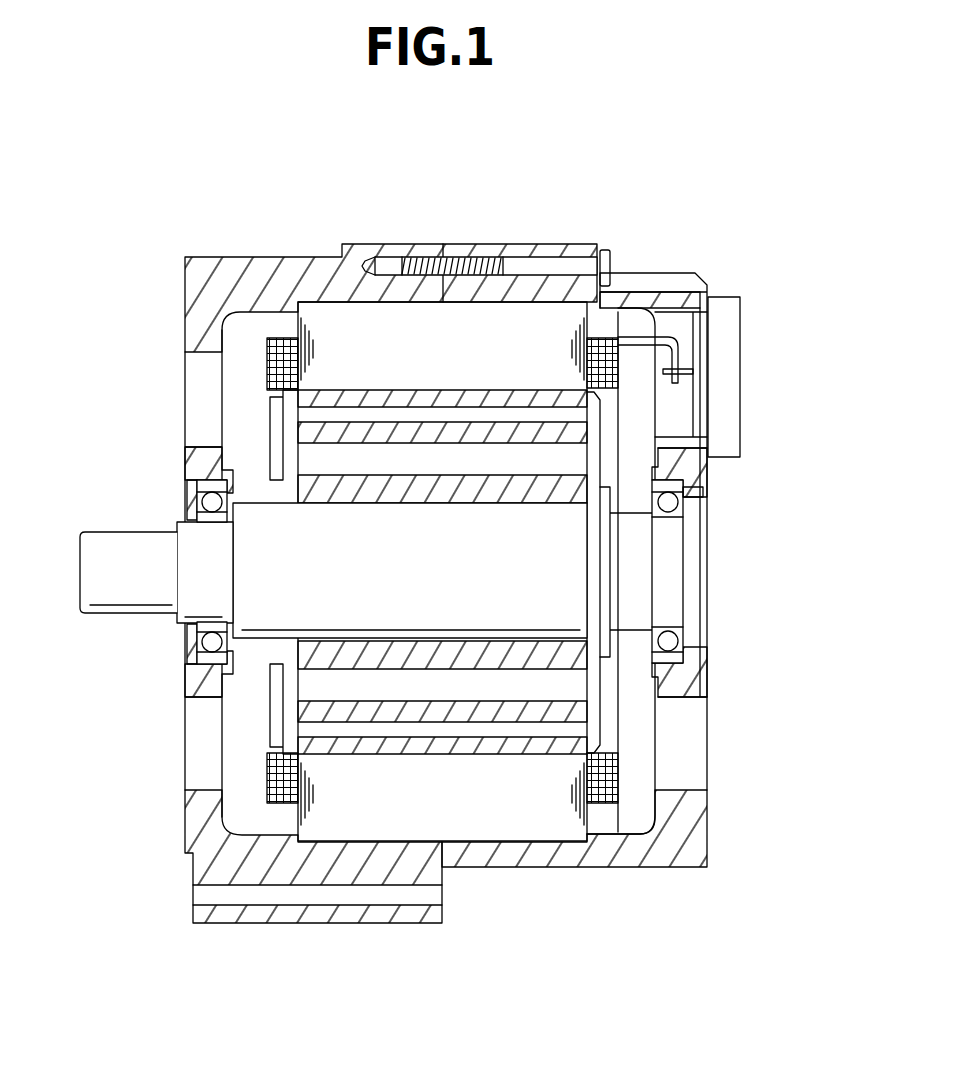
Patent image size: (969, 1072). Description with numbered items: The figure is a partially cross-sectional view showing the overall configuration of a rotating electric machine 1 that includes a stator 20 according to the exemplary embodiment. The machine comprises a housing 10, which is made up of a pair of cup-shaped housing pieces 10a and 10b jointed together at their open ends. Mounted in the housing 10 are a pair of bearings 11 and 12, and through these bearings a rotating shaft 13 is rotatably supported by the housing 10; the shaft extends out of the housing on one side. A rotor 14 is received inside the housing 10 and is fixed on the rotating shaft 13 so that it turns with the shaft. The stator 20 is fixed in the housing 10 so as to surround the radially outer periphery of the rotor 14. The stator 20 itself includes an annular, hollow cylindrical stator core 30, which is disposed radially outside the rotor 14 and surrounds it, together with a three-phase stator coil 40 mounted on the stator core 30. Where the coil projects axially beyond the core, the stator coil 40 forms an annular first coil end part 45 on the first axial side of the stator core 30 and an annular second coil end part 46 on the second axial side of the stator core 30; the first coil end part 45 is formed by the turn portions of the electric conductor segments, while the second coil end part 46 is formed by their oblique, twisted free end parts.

The rotating electric machine 1 is at (735, 183).
The housing 10 is at (503, 106).
The housing piece 10a is at (340, 263).
The housing piece 10b is at (467, 247).
The bearing 11 is at (207, 488).
The bearing 12 is at (670, 489).
The rotating shaft 13 is at (133, 593).
The rotor 14 is at (573, 430).
The stator 20 is at (548, 298).
The stator core 30 is at (511, 797).
The stator coil 40 is at (612, 805).
The first coil end part 45 is at (620, 770).
The second coil end part 46 is at (267, 771).